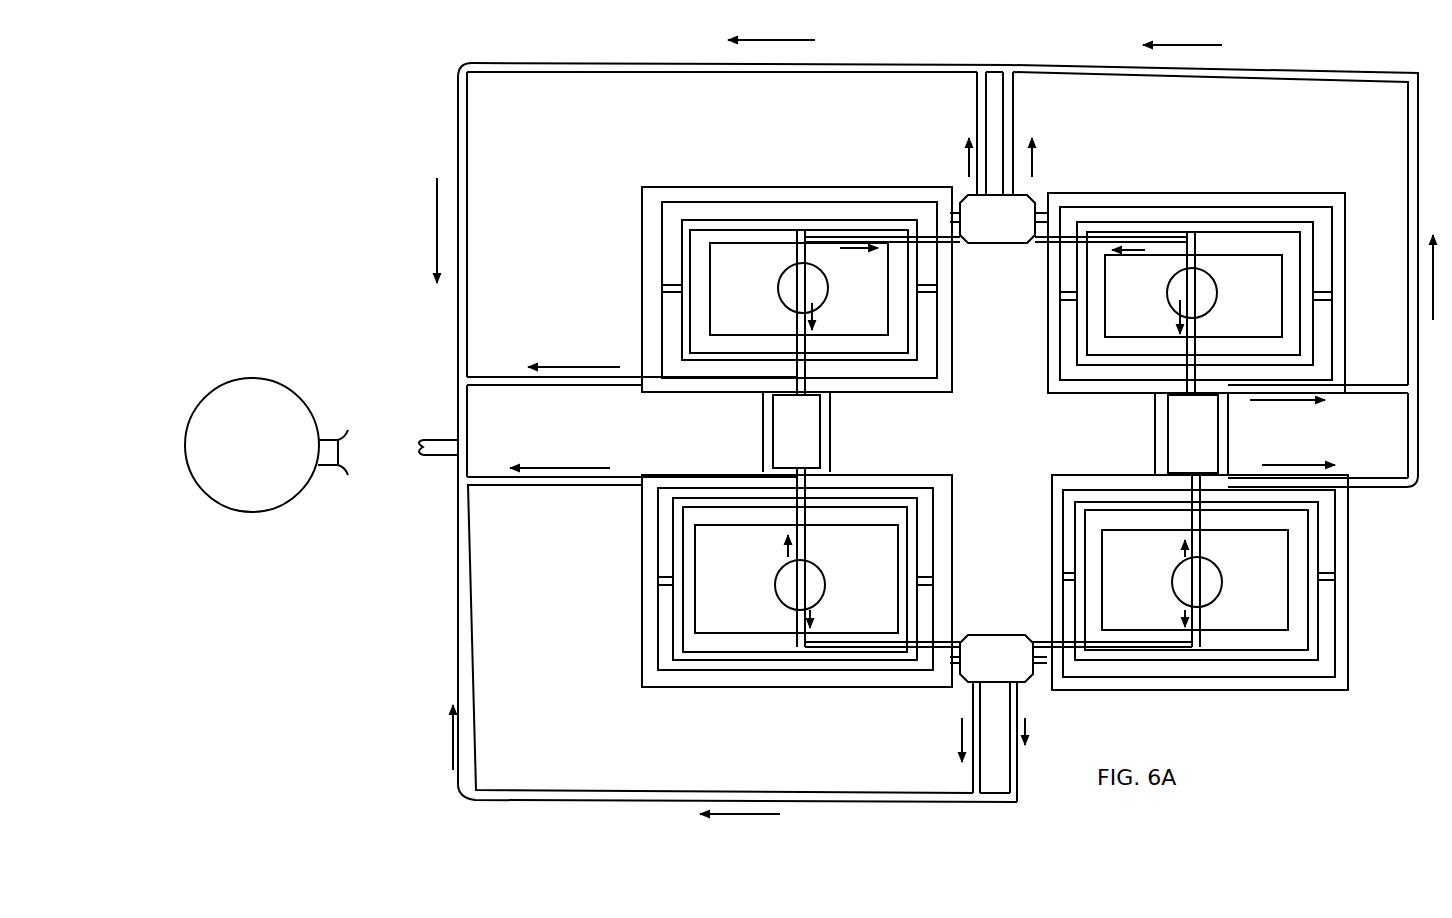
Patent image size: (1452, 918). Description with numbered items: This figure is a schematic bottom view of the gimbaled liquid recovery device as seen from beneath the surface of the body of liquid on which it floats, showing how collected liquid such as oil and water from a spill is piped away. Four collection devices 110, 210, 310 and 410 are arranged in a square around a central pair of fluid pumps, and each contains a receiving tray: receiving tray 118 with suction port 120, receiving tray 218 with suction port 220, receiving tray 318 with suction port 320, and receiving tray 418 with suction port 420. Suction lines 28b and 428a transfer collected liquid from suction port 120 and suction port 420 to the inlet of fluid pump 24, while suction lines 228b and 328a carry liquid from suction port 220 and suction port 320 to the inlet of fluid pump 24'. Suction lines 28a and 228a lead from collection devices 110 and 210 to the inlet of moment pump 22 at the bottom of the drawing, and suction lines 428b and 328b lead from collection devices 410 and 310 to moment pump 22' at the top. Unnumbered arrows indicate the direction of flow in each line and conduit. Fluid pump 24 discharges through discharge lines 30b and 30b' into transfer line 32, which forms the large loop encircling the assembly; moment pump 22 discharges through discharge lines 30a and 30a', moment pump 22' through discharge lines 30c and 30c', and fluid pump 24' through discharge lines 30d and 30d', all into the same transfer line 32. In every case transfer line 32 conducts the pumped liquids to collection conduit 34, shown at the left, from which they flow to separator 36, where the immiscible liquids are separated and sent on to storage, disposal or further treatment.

The transfer line 32 is at (922, 63).
The separator 36 is at (252, 398).
The collection conduit 34 is at (338, 467).
The discharge line 30a is at (945, 737).
The discharge line 30a' is at (1049, 742).
The discharge line 30b is at (632, 397).
The discharge line 30b' is at (632, 501).
The discharge line 30c is at (950, 133).
The discharge line 30c' is at (1051, 133).
The discharge line 30d is at (1318, 368).
The discharge line 30d' is at (1332, 509).
The moment pump 22 is at (998, 634).
The moment pump 22' is at (998, 250).
The fluid pump 24 is at (840, 432).
The fluid pump 24' is at (1155, 434).
The collection device 110 is at (797, 611).
The receiving tray 118 is at (748, 562).
The suction port 120 is at (812, 582).
The suction line 28a is at (797, 622).
The suction line 28b is at (806, 545).
The collection device 210 is at (1200, 614).
The receiving tray 218 is at (1152, 560).
The suction port 220 is at (1205, 585).
The suction line 228a is at (1165, 642).
The suction line 228b is at (1201, 552).
The collection device 310 is at (1196, 268).
The receiving tray 318 is at (1142, 288).
The suction port 320 is at (1197, 293).
The suction line 328a is at (1197, 331).
The suction line 328b is at (1196, 260).
The collection device 410 is at (797, 267).
The receiving tray 418 is at (838, 266).
The suction port 420 is at (780, 300).
The suction line 428a is at (810, 334).
The suction line 428b is at (798, 254).